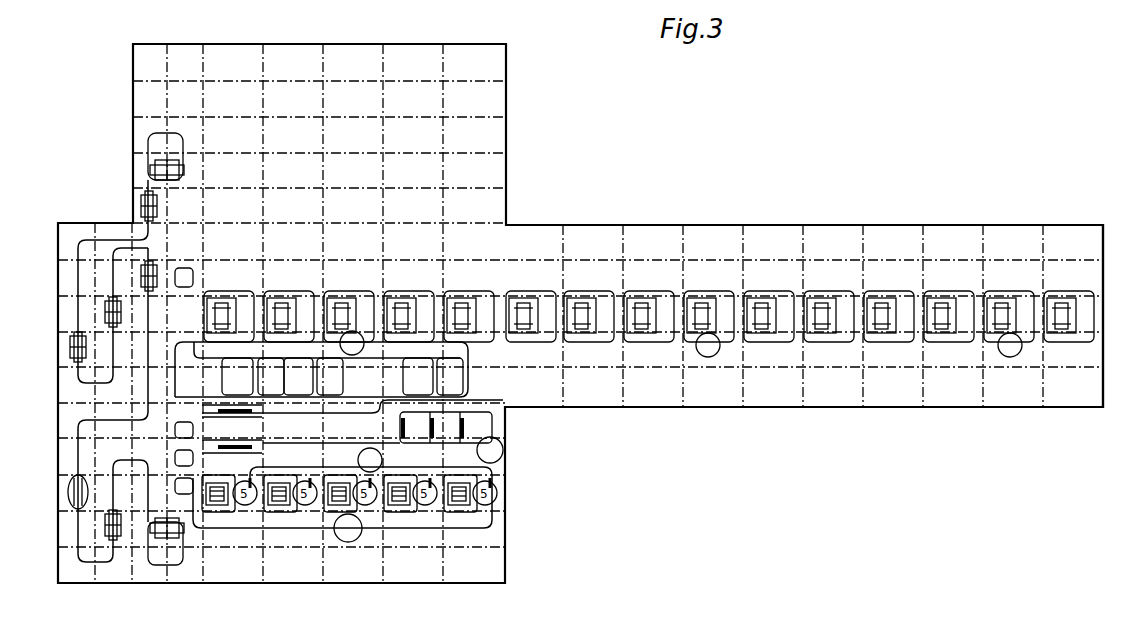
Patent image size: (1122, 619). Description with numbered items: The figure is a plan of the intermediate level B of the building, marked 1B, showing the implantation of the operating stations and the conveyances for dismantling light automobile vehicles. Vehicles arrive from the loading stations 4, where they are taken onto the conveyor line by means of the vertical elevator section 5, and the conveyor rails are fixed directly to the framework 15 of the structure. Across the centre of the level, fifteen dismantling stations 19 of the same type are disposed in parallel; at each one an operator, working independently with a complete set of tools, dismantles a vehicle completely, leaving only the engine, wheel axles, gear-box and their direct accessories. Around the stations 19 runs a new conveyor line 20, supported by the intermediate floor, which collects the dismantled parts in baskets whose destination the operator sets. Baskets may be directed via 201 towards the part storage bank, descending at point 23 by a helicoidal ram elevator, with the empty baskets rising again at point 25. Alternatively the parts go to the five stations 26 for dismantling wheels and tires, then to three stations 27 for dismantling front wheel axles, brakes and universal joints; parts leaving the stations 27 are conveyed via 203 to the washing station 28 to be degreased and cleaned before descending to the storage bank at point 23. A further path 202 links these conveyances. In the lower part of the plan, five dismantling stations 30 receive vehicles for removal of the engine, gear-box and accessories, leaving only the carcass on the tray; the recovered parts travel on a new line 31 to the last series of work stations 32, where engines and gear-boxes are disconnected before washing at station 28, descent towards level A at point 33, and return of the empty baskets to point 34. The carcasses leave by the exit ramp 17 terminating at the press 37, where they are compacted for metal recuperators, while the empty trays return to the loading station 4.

The level B of structure 1B is at (731, 222).
The loading station 4 is at (109, 365).
The vertical elevator section 5 is at (365, 491).
The framework 15 is at (166, 156).
The exit ramp 17 is at (166, 542).
The dismantling station 19 is at (649, 316).
The conveyor line 20 is at (681, 344).
The descent point 23 is at (174, 432).
The rising point 25 is at (185, 266).
The wheel and tire dismantling station 26 is at (295, 376).
The front axle dismantling station 27 is at (445, 376).
The washing station 28 is at (232, 429).
The engine dismantling station 30 is at (339, 482).
The conveyor line 31 is at (348, 489).
The work station 32 is at (377, 427).
The descent point 33 is at (174, 460).
The basket return point 34 is at (174, 488).
The press 37 is at (80, 479).
The conveyor path 201 is at (321, 369).
The conveyor path section 202 is at (327, 350).
The conveyor path 203 is at (352, 413).